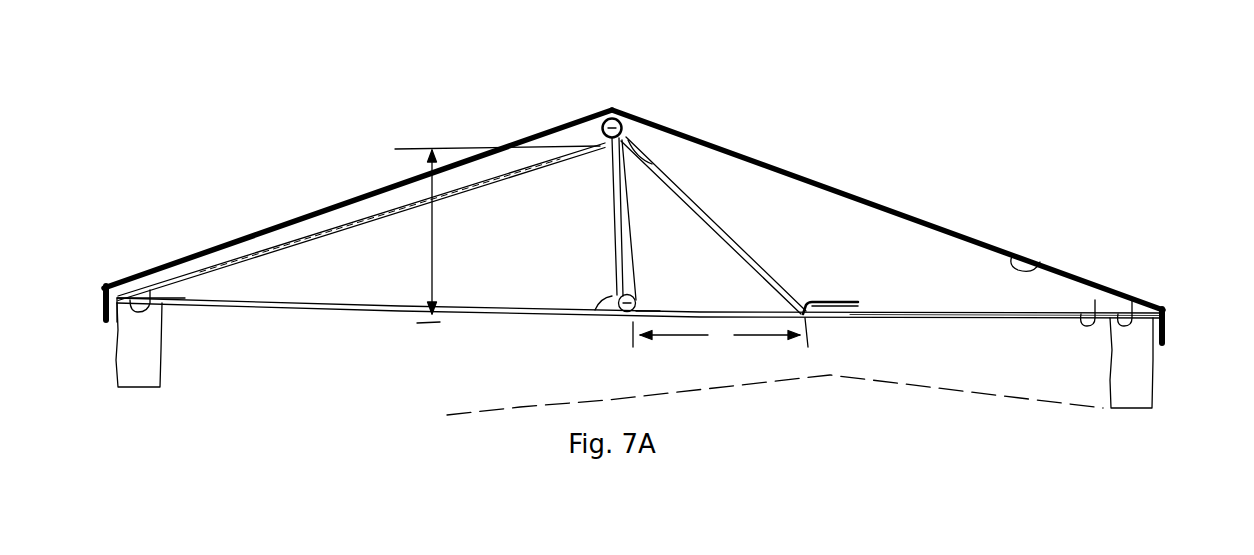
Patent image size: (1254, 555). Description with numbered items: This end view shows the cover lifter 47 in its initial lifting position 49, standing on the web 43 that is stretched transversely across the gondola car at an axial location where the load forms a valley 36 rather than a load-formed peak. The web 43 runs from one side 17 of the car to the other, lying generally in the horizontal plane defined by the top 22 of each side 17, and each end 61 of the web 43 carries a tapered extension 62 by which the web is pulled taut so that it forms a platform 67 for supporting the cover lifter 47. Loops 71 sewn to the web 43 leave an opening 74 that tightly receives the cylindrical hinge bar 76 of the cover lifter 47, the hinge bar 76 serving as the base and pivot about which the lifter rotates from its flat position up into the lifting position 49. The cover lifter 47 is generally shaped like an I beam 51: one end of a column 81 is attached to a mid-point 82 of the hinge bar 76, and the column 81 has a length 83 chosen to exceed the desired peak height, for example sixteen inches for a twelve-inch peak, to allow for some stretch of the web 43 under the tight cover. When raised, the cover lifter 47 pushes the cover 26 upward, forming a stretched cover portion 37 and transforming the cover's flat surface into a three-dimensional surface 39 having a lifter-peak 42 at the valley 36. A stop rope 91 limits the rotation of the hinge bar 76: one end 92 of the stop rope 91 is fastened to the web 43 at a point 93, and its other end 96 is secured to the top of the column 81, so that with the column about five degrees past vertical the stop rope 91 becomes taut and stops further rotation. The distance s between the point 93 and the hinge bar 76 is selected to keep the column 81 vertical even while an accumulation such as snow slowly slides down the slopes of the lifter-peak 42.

The side 17 is at (1187, 420).
The top 22 is at (150, 290).
The cover 26 is at (1040, 262).
The valley 36 is at (768, 395).
The stretched cover portion 37 is at (570, 120).
The three-dimensional surface 39 is at (754, 146).
The lifter-peak 42 is at (618, 102).
The web 43 is at (314, 312).
The cover lifter 47 is at (598, 203).
The lifting position 49 is at (593, 253).
The I beam 51 is at (634, 253).
The end 61 is at (1095, 300).
The tapered extension 62 is at (1165, 308).
The platform 67 is at (962, 326).
The loop 71 is at (640, 306).
The opening 74 is at (616, 313).
The hinge bar 76 is at (600, 298).
The column 81 is at (612, 177).
The mid-point 82 is at (632, 229).
The length 83 is at (497, 234).
The stop rope 91 is at (724, 238).
The end 92 is at (796, 300).
The point 93 is at (812, 325).
The other end 96 is at (642, 162).
The distance s is at (716, 334).